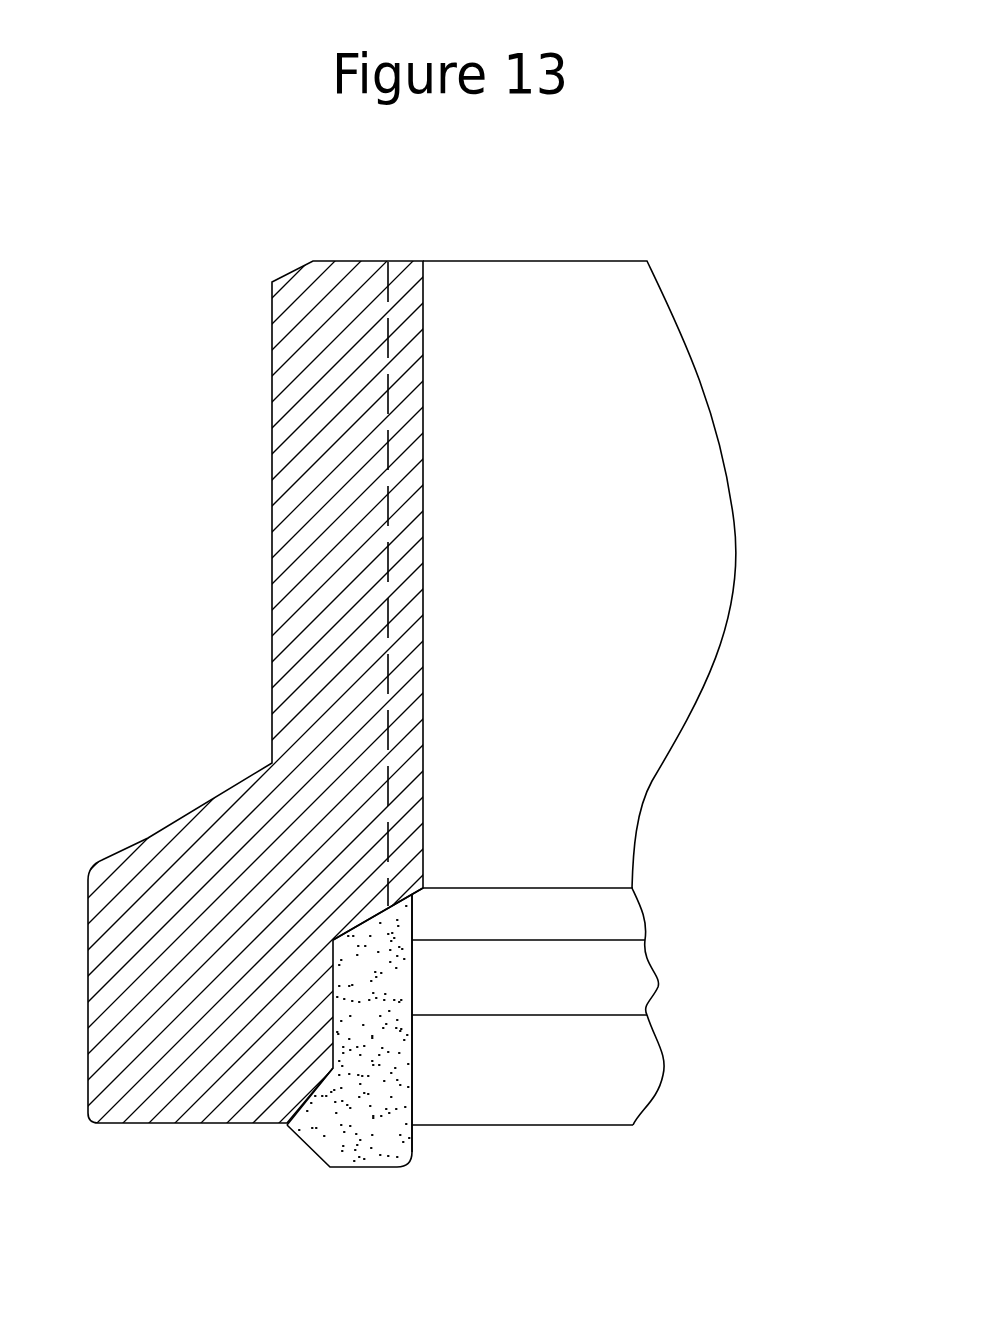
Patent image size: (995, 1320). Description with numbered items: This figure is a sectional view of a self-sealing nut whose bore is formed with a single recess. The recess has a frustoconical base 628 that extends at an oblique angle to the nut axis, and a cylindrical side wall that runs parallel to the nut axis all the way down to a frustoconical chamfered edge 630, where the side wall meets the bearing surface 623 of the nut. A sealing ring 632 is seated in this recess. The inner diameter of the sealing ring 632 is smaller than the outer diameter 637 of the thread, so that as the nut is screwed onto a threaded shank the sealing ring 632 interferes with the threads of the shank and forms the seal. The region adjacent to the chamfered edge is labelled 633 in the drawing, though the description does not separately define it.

The bearing surface 623 is at (182, 1124).
The outer diameter of the thread 637 is at (385, 612).
The frustoconical base 628 is at (367, 925).
The sealing ring 632 is at (412, 1041).
The frustoconical chamfered edge 630 is at (310, 1100).
The lower seal face 633 is at (305, 1140).